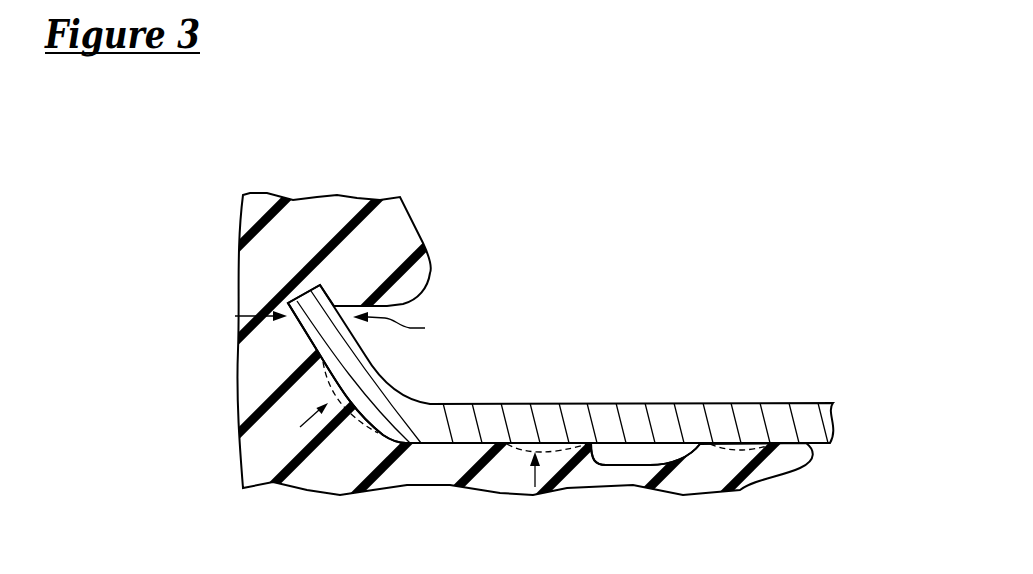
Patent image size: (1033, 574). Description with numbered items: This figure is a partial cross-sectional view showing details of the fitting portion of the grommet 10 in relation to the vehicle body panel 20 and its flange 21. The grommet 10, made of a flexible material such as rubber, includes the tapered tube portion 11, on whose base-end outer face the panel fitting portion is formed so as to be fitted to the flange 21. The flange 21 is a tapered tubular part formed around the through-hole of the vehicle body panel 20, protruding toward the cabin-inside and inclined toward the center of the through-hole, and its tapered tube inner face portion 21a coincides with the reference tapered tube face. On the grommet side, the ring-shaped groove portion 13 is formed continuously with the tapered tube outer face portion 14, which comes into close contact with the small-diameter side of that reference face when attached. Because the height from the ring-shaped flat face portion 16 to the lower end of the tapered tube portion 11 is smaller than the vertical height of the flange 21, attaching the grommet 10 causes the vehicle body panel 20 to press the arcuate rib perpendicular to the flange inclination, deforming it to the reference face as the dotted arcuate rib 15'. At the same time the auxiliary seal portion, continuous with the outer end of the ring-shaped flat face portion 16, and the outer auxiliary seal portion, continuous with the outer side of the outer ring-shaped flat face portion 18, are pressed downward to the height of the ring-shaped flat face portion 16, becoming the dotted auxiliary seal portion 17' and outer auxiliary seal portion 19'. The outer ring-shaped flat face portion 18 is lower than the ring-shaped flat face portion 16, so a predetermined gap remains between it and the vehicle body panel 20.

The grommet 10 is at (512, 190).
The tapered tube portion 11 is at (323, 203).
The ring-shaped groove portion 13 is at (403, 327).
The tapered tube outer face portion 14 is at (305, 346).
The arcuate rib (deformed state) 15' is at (280, 389).
The ring-shaped flat face portion 16 is at (433, 446).
The auxiliary seal portion (deformed state) 17' is at (538, 502).
The outer ring-shaped flat face portion 18 is at (630, 466).
The outer auxiliary seal portion (deformed state) 19' is at (731, 502).
The vehicle body panel 20 is at (770, 388).
The flange 21 is at (363, 350).
The tapered tube inner face portion 21a is at (322, 364).